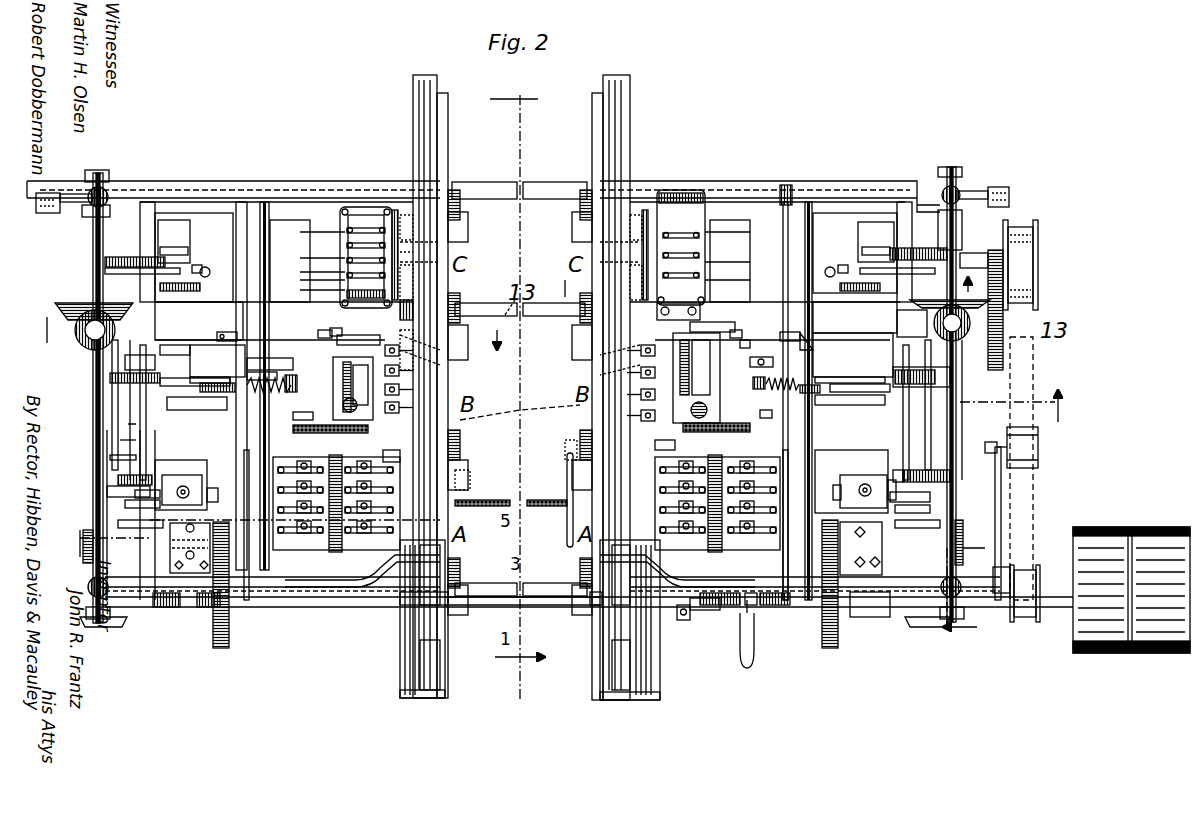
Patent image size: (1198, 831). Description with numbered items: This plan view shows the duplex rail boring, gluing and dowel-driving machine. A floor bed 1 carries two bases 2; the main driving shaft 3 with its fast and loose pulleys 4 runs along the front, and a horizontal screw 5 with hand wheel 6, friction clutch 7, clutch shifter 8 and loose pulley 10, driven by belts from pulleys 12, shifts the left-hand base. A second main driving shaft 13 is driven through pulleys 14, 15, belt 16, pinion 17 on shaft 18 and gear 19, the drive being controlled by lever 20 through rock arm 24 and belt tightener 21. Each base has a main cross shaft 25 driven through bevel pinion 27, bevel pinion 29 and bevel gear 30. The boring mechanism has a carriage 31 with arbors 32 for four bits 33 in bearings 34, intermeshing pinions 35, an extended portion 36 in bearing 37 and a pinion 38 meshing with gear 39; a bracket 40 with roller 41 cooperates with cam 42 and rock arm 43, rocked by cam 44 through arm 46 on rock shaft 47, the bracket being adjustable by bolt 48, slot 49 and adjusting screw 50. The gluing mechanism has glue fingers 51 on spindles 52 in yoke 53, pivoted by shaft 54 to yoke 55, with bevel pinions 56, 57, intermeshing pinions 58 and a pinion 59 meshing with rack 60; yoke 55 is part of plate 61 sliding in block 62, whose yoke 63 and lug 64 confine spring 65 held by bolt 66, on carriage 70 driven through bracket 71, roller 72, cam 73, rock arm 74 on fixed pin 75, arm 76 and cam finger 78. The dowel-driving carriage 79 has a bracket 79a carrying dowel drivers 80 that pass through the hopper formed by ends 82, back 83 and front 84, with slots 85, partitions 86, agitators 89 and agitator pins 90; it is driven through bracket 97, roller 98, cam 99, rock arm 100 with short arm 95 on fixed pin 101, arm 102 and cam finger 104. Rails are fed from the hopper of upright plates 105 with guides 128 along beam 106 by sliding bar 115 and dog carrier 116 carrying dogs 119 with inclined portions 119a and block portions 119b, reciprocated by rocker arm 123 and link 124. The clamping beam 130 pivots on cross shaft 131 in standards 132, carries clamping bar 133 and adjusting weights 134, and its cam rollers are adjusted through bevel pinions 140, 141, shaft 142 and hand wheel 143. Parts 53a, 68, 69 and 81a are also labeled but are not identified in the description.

The floor bed 1 is at (515, 185).
The bases 2 is at (123, 440).
The main driving shaft 3 is at (533, 585).
The fast and loose pulleys 4 is at (1145, 528).
The long horizontal screw 5 is at (511, 503).
The hand wheel 6 is at (517, 384).
The friction clutch 7 is at (972, 600).
The clutch shifter 8 is at (762, 648).
The pulley 10 is at (770, 286).
The pulleys 12 is at (780, 607).
The second main driving shaft 13 is at (70, 345).
The pulley 14 is at (1048, 540).
The pulley 15 is at (1038, 240).
The connecting belt 16 is at (1033, 355).
The pinion 17 is at (993, 250).
The shaft 18 is at (977, 257).
The gear 19 is at (1003, 340).
The lever 20 is at (686, 622).
The belt tightener 21 is at (1038, 436).
The rock arm 24 is at (1001, 505).
The main cross shaft 25 is at (985, 446).
The bevel pinion 27 is at (925, 355).
The bevel pinion 29 is at (85, 345).
The bevel gear 30 is at (75, 303).
The carriage 31 is at (220, 462).
The arbors 32 is at (270, 470).
The bits 33 is at (542, 465).
The bearings 34 is at (300, 552).
The intermeshing pinions 35 is at (340, 590).
The extended portion of arbor 36 is at (247, 600).
The bearing 37 is at (172, 610).
The pinion 38 is at (200, 578).
The gear 39 is at (220, 650).
The bracket 40 is at (140, 502).
The roller 41 is at (960, 503).
The cam 42 is at (85, 530).
The actuating rock arm 43 is at (890, 480).
The second cam 44 is at (140, 490).
The arm 46 is at (150, 477).
The rock shaft 47 is at (528, 530).
The bolt 48 is at (186, 484).
The slot 49 is at (182, 486).
The adjusting screw 50 is at (524, 503).
The glue fingers 51 is at (600, 380).
The spindles 52 is at (673, 345).
The U-shaped frame or yoke 53 is at (530, 446).
The block 53a is at (540, 323).
The shaft 54 is at (360, 345).
The yoke 55 is at (521, 419).
The bevel pinion 56 is at (525, 392).
The bevel pinion 57 is at (340, 370).
The intermeshing pinions 58 is at (520, 359).
The pinion 59 is at (525, 491).
The rack 60 is at (531, 378).
The reciprocating plate 61 is at (280, 360).
The block 62 is at (260, 358).
The yoke 63 is at (843, 352).
The lug 64 is at (521, 424).
The spring 65 is at (523, 365).
The bolt 66 is at (535, 372).
The block 68 is at (706, 312).
The block 69 is at (240, 332).
The carriage 70 is at (230, 345).
The bracket 71 is at (185, 410).
The roller 72 is at (525, 394).
The cam 73 is at (520, 405).
The rock arm 74 is at (526, 388).
The fixed pin 75 is at (525, 412).
The arm 76 is at (175, 353).
The cam finger 78 is at (895, 372).
The reciprocating carriage 79 is at (526, 257).
The vertical bracket 79a is at (308, 256).
The dowel drivers 80 is at (522, 261).
The arm 81a is at (420, 257).
The sides or ends 82 is at (345, 230).
The back 83 is at (715, 172).
The front 84 is at (380, 212).
The slots 85 is at (521, 282).
The vertical partitions 86 is at (528, 273).
The movable agitators 89 is at (520, 245).
The agitator pins 90 is at (516, 272).
The short arm 95 is at (521, 224).
The bracket 97 is at (175, 292).
The roller 98 is at (150, 275).
The cam 99 is at (125, 268).
The rock arm 100 is at (519, 259).
The fixed pin 101 is at (150, 240).
The arm 102 is at (526, 241).
The cam finger 104 is at (526, 246).
The upright plates 105 is at (425, 700).
The plate or beam 106 is at (445, 680).
The sliding bar 115 is at (480, 615).
The dog carrier 116 is at (445, 615).
The dogs 119 is at (520, 389).
The projecting portion of dog 119a is at (524, 379).
The main portion of dog 119b is at (520, 417).
The rocker arm 123 is at (750, 606).
The link 124 is at (786, 185).
The guides 128 is at (525, 617).
The beam or frame 130 is at (205, 190).
The cross shaft 131 is at (245, 205).
The standards 132 is at (263, 205).
The clamping bar 133 is at (520, 406).
The adjusting weights 134 is at (48, 193).
The bevel pinion 140 is at (108, 195).
The pinion 141 is at (945, 585).
The shaft or rod 142 is at (968, 422).
The hand wheel 143 is at (120, 624).